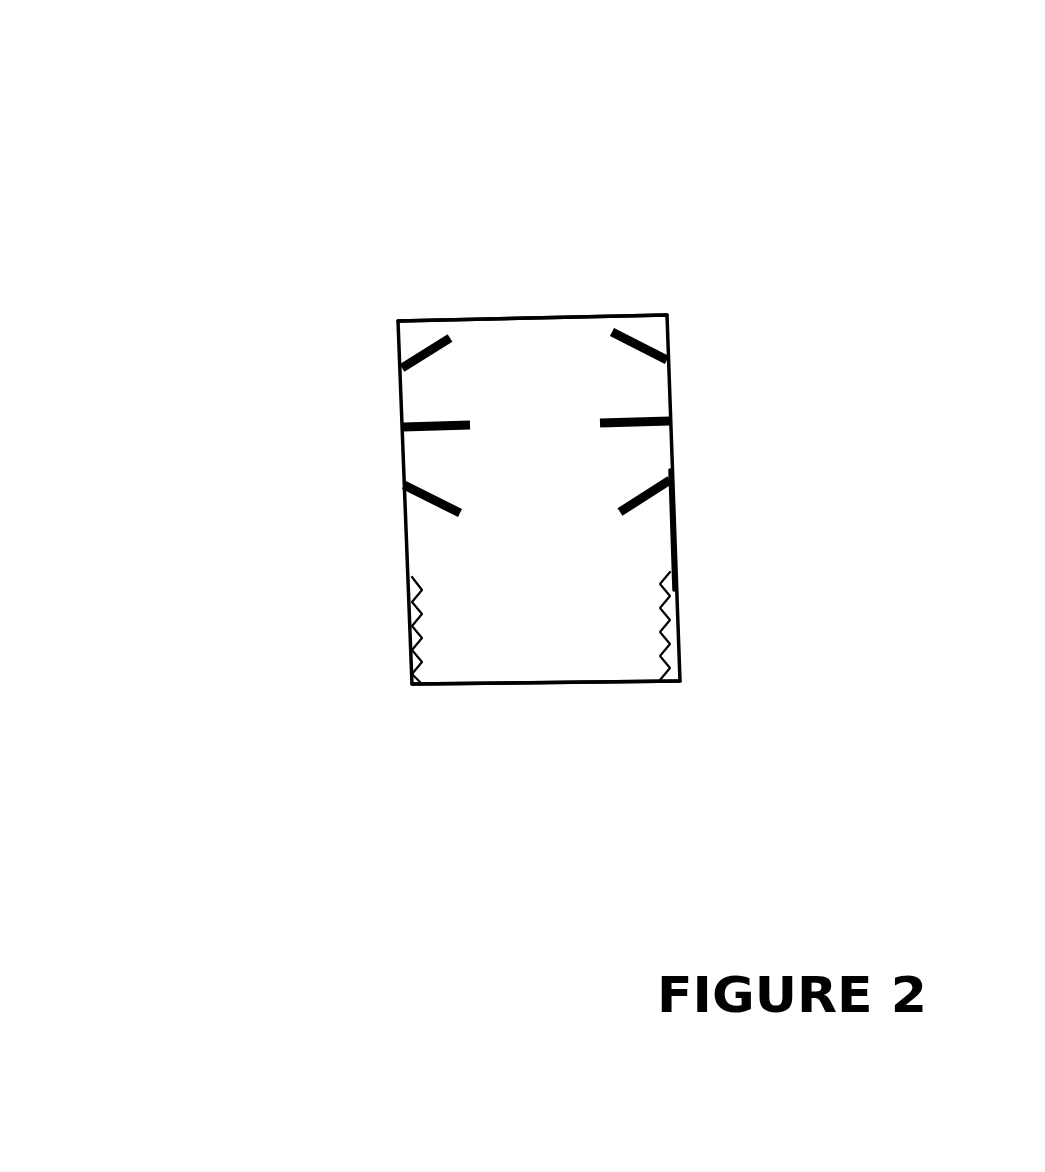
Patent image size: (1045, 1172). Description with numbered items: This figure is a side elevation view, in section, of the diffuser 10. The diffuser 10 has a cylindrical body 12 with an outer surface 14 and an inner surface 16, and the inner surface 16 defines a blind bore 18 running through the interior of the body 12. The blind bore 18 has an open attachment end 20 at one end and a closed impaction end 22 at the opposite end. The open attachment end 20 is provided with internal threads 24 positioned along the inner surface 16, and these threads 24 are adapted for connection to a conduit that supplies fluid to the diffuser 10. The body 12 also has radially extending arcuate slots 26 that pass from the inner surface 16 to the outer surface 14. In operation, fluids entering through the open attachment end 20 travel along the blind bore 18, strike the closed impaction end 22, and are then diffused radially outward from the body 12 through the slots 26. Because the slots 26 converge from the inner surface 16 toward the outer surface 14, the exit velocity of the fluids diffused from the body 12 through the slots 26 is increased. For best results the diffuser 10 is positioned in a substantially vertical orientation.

The diffuser 10 is at (432, 415).
The cylindrical body 12 is at (672, 383).
The outer surface 14 is at (673, 528).
The inner surface 16 is at (670, 545).
The blind bore 18 is at (549, 506).
The open attachment end 20 is at (530, 684).
The closed impaction end 22 is at (535, 318).
The internal threads 24 is at (420, 650).
The slots 26 is at (672, 413).